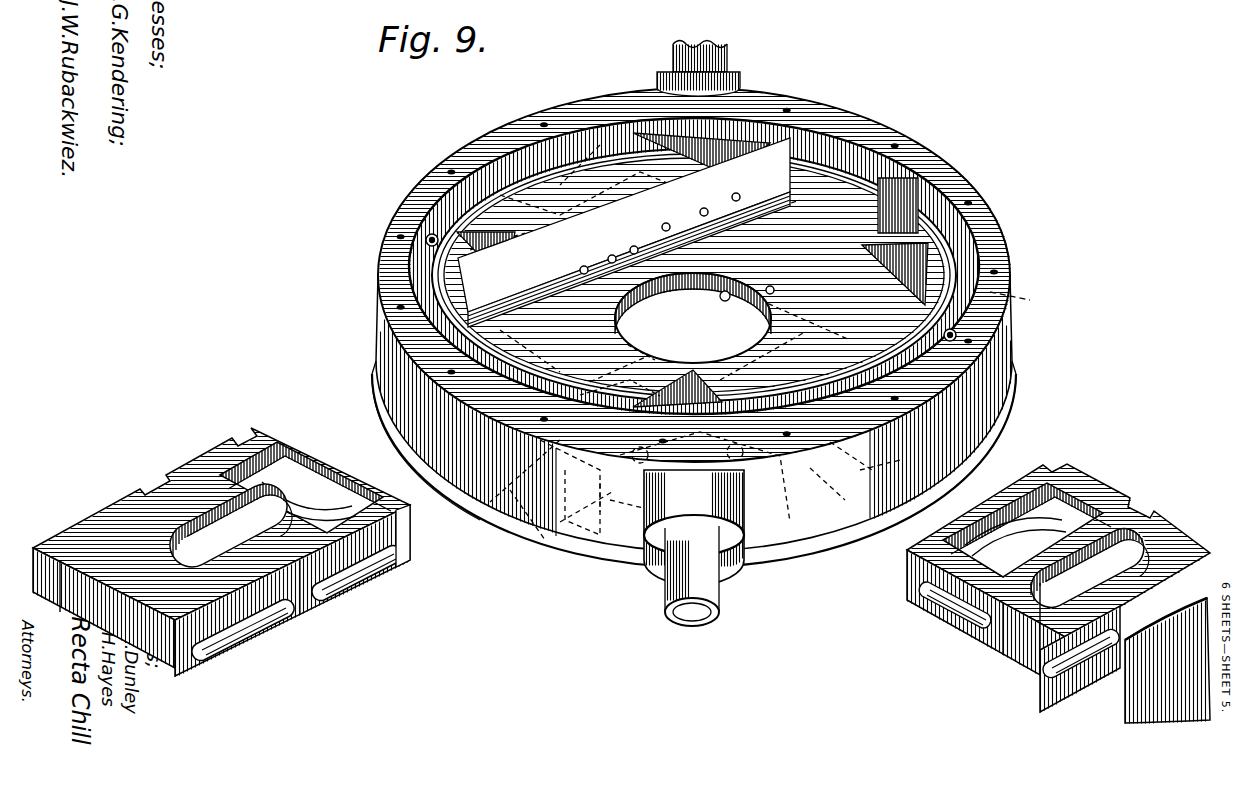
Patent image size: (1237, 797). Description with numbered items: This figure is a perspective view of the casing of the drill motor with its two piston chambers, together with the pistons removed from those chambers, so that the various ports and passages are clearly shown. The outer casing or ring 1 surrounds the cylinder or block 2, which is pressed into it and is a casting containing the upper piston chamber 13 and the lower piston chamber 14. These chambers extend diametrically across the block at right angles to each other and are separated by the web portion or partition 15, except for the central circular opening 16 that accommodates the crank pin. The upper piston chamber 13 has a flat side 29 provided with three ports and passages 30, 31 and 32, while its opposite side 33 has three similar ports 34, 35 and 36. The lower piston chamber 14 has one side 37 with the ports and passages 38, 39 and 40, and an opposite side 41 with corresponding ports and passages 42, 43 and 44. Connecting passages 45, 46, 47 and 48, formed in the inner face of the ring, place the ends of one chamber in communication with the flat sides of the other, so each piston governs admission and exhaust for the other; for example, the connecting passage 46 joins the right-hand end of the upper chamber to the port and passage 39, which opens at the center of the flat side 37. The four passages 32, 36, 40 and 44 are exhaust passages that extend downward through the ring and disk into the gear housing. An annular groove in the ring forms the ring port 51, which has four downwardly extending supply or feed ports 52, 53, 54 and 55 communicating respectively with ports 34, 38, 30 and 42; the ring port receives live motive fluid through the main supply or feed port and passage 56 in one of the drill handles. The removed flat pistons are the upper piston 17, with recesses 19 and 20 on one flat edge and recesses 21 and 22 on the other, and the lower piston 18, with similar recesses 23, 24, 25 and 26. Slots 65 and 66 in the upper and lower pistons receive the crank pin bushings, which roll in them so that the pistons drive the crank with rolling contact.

The outer casing or ring 1 is at (385, 355).
The cylinder or block 2 is at (446, 190).
The upper piston chamber 13 is at (695, 276).
The lower piston chamber 14 is at (872, 538).
The web portion or partition 15 is at (640, 342).
The central circular opening 16 is at (706, 314).
The upper piston 17 is at (280, 610).
The lower piston 18 is at (1005, 630).
The recess 19 is at (242, 637).
The recess 20 is at (361, 557).
The recess 21 is at (100, 528).
The recess 22 is at (252, 440).
The recess 23 is at (940, 608).
The recess 24 is at (1075, 680).
The recess 25 is at (1096, 516).
The recess 26 is at (1170, 560).
The flat side 29 is at (624, 225).
The port and passage 30 is at (629, 259).
The port and passage 31 is at (660, 243).
The exhaust passage 32 is at (560, 116).
The inner ring edge 33 is at (975, 205).
The port and passage 34 is at (879, 275).
The port and passage 35 is at (695, 367).
The exhaust passage 36 is at (718, 356).
The flat side 37 is at (693, 318).
The port and passage 38 is at (701, 195).
The port and passage 39 is at (783, 275).
The exhaust passage 40 is at (763, 342).
The flat side 41 is at (500, 292).
The port and passage 42 is at (555, 565).
The port and passage 43 is at (620, 381).
The exhaust passage 44 is at (372, 405).
The connecting passage 45 is at (488, 152).
The connecting passage 46 is at (918, 185).
The connecting passage 47 is at (988, 442).
The connecting passage 48 is at (677, 483).
The ring port 51 is at (765, 118).
The supply or feed port and passage 52 is at (957, 338).
The supply or feed port and passage 53 is at (825, 136).
The supply or feed port and passage 54 is at (425, 240).
The supply or feed port and passage 55 is at (564, 502).
The main supply or feed port and passage 56 is at (688, 650).
The slot 65 is at (231, 525).
The slot 66 is at (1090, 568).